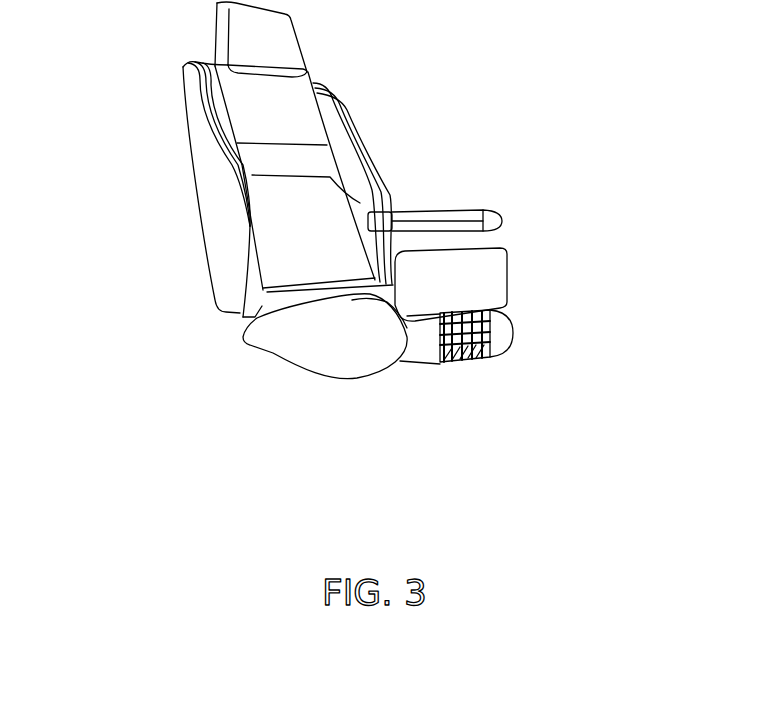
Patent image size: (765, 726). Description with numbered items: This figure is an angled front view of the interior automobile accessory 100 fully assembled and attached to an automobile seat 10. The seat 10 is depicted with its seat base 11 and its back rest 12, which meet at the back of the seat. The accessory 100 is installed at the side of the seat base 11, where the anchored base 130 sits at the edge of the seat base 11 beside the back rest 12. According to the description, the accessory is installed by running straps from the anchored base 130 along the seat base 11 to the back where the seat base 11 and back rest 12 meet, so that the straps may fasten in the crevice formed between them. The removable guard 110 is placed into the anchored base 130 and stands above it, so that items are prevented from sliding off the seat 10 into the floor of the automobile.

The automobile seat 10 is at (143, 113).
The seat base 11 is at (318, 338).
The back rest 12 is at (360, 203).
The interior automobile accessory 100 is at (546, 235).
The removable guard 110 is at (500, 256).
The anchored base 130 is at (500, 340).